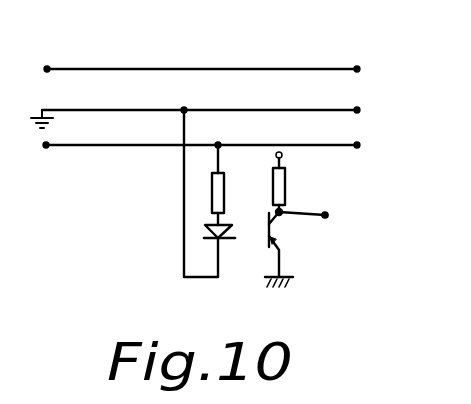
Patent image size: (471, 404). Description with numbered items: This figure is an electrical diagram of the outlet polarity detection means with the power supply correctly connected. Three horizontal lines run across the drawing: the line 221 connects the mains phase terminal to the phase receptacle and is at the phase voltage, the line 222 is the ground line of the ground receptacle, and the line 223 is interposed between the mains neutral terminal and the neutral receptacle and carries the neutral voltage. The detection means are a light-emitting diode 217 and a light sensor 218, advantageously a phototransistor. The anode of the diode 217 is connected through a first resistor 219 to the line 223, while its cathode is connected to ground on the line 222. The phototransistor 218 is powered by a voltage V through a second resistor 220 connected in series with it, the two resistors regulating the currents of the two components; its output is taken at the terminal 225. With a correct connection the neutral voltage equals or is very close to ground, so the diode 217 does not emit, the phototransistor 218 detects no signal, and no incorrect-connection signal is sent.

The light-emitting diode 217 is at (228, 246).
The light sensor 218 is at (281, 237).
The first resistor 219 is at (227, 190).
The second resistor 220 is at (287, 181).
The line 221 is at (300, 63).
The line 222 is at (327, 108).
The line 223 is at (107, 145).
The output terminal 225 is at (319, 215).